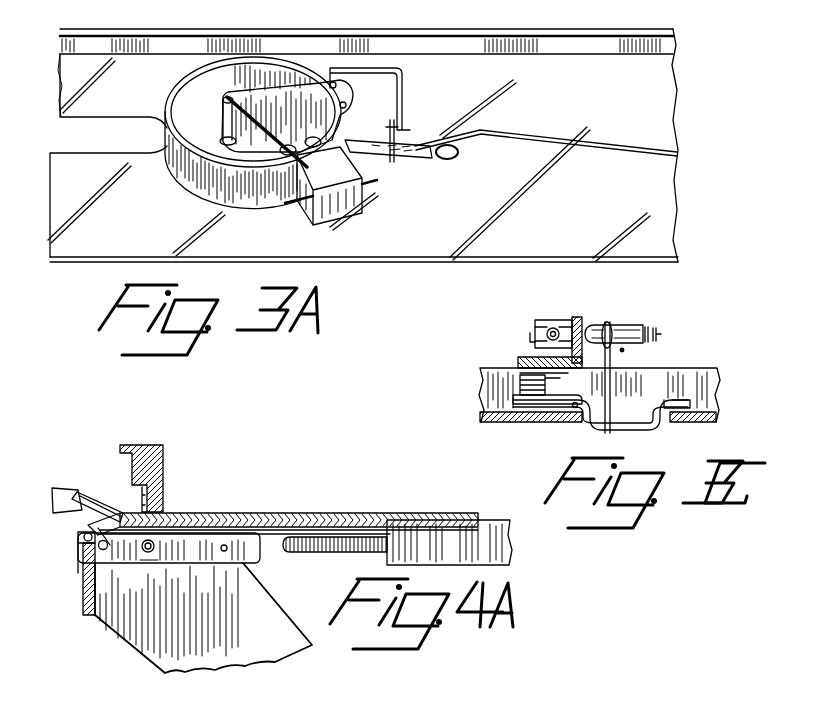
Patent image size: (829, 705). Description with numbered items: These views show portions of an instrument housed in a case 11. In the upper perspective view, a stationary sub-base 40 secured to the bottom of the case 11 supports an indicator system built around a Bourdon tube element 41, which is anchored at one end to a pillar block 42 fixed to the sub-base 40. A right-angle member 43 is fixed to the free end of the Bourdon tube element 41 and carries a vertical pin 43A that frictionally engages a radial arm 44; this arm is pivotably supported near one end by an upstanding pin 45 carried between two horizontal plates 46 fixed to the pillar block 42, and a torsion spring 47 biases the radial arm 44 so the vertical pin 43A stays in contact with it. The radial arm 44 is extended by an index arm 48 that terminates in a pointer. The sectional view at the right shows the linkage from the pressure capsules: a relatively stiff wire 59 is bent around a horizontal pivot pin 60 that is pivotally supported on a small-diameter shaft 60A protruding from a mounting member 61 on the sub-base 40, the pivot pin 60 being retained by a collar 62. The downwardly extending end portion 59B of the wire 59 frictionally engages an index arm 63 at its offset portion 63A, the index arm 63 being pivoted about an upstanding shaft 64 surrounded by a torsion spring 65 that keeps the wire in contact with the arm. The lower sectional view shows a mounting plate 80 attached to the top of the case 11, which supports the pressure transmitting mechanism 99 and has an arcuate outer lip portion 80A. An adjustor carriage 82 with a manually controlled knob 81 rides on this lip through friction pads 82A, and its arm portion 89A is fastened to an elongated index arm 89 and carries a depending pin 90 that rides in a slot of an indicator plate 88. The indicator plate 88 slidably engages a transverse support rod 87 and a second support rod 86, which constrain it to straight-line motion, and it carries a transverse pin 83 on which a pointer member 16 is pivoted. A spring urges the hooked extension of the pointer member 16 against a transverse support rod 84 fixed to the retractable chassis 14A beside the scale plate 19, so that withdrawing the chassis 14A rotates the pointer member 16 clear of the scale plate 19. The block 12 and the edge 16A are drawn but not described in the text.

In FIG. 3A, the stationary sub-base 40 is at (560, 232).
In FIG. 3C, the stationary sub-base 40 is at (718, 412).
In FIG. 3A, the Bourdon tube element 41 is at (208, 82).
In FIG. 3A, the pillar block 42 is at (358, 202).
In FIG. 3A, the right-angle member 43 is at (400, 92).
In FIG. 3A, the vertical pin 43A is at (390, 130).
In FIG. 3A, the radial arm 44 is at (418, 142).
In FIG. 3A, the upstanding pin 45 is at (287, 123).
In FIG. 3A, the horizontal plates 46 is at (235, 114).
In FIG. 3A, the torsion spring 47 is at (443, 160).
In FIG. 3A, the index arm 48 is at (518, 132).
In FIG. 3C, the wire 59 is at (611, 322).
In FIG. 3C, the end portion of the wire 59B is at (608, 400).
In FIG. 3C, the pivot pin 60 is at (636, 345).
In FIG. 3C, the small-diameter shaft 60A is at (657, 336).
In FIG. 3C, the mounting member 61 is at (578, 318).
In FIG. 3C, the collar 62 is at (566, 319).
In FIG. 3C, the index arm 63 is at (682, 400).
In FIG. 3C, the offset portion 63A is at (658, 430).
In FIG. 3C, the upstanding shaft 64 is at (522, 357).
In FIG. 3C, the torsion spring 65 is at (520, 378).
In FIG. 4A, the case 11 is at (250, 514).
In FIG. 4A, the block 12 is at (142, 450).
In FIG. 4A, the retractable chassis 14A is at (138, 630).
In FIG. 4A, the pointer member 16 is at (78, 561).
In FIG. 4A, the edge 16A is at (95, 524).
In FIG. 4A, the scale plate 19 is at (83, 598).
In FIG. 4A, the mounting plate 80 is at (300, 516).
In FIG. 4A, the outer lip portion 80A is at (118, 510).
In FIG. 4A, the manually controlled knob 81 is at (50, 494).
In FIG. 4A, the adjustor carriage 82 is at (100, 500).
In FIG. 4A, the friction pads 82A is at (150, 500).
In FIG. 4A, the transverse pin 83 is at (83, 538).
In FIG. 4A, the transverse support rod 84 is at (105, 550).
In FIG. 4A, the second support rod 86 is at (152, 552).
In FIG. 4A, the transverse support rod 87 is at (225, 552).
In FIG. 4A, the indicator plate 88 is at (202, 545).
In FIG. 4A, the index arm 89 is at (362, 540).
In FIG. 4A, the arm portion 89A is at (280, 552).
In FIG. 4A, the depending pin 90 is at (147, 555).
In FIG. 4A, the pressure transmitting mechanism 99 is at (172, 465).